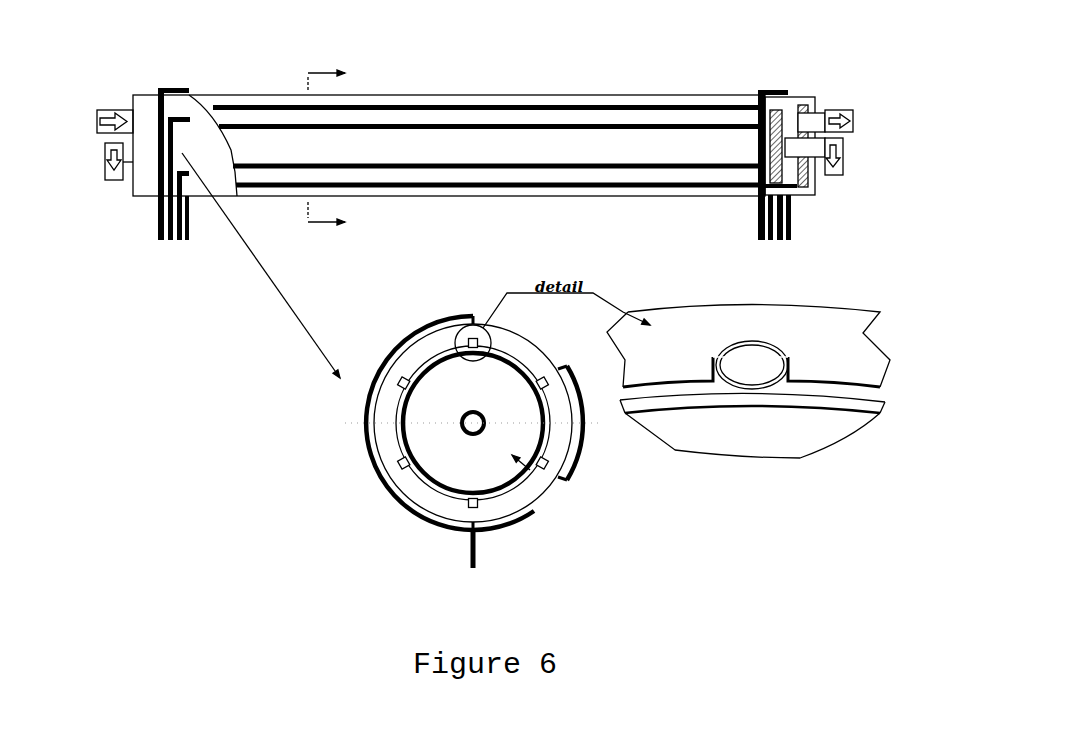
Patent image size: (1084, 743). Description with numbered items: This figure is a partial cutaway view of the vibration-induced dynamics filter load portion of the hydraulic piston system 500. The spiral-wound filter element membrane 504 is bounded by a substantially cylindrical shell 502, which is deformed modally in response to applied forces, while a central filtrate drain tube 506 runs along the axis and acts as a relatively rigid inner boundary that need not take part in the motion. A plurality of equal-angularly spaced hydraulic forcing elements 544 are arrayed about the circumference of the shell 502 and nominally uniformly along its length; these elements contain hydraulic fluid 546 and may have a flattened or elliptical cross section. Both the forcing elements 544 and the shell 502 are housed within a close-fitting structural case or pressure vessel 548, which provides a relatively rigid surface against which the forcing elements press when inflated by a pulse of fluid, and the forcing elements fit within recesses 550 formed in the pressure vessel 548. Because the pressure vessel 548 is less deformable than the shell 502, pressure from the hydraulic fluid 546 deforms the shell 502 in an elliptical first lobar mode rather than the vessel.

The hydraulic piston system 500 is at (157, 62).
The shell 502 is at (573, 140).
The SW filter element membrane 504 is at (540, 467).
The central filtrate drain tube 506 is at (797, 147).
The hydraulic forcing elements 544 is at (443, 182).
The hydraulic fluid 546 is at (762, 368).
The pressure vessel 548 is at (200, 148).
The recesses 550 is at (748, 337).